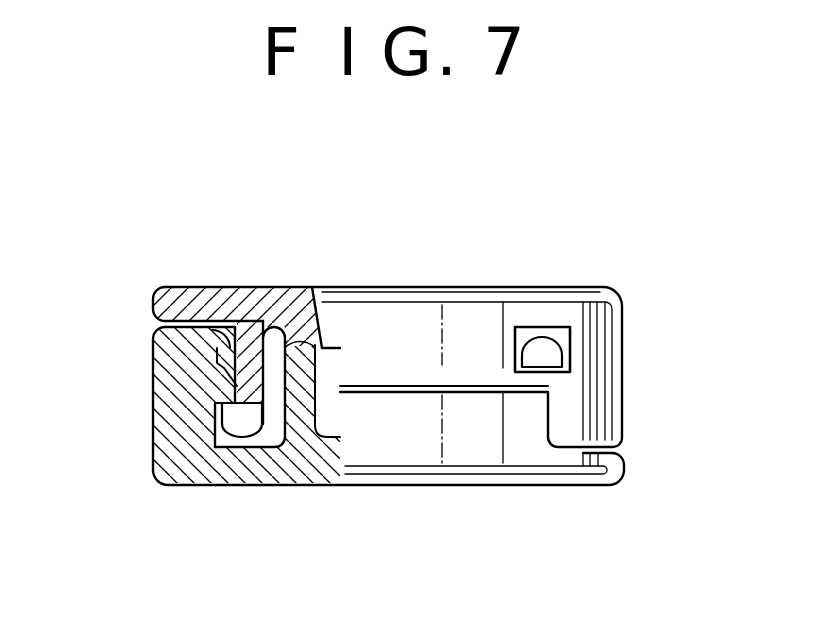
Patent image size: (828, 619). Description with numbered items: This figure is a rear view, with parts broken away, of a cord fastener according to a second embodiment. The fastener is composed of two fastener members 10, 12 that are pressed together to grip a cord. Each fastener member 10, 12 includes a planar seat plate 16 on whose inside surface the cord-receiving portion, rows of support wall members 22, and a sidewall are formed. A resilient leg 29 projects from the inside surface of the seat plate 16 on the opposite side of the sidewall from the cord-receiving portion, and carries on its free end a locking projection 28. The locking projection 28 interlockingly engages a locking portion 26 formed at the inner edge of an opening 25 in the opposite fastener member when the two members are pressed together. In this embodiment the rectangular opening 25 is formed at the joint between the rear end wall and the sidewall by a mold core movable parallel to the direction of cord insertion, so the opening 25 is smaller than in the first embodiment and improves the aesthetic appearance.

The fastener member 10 is at (468, 490).
The fastener member 12 is at (436, 285).
The seat plate 16 is at (620, 474).
The support wall member 22 is at (305, 320).
The opening 25 is at (215, 442).
The locking portion 26 is at (215, 390).
The locking projection 28 is at (540, 350).
The resilient leg 29 is at (240, 347).